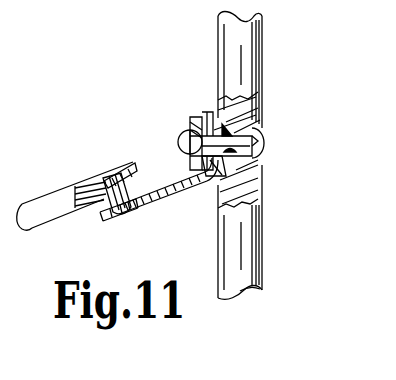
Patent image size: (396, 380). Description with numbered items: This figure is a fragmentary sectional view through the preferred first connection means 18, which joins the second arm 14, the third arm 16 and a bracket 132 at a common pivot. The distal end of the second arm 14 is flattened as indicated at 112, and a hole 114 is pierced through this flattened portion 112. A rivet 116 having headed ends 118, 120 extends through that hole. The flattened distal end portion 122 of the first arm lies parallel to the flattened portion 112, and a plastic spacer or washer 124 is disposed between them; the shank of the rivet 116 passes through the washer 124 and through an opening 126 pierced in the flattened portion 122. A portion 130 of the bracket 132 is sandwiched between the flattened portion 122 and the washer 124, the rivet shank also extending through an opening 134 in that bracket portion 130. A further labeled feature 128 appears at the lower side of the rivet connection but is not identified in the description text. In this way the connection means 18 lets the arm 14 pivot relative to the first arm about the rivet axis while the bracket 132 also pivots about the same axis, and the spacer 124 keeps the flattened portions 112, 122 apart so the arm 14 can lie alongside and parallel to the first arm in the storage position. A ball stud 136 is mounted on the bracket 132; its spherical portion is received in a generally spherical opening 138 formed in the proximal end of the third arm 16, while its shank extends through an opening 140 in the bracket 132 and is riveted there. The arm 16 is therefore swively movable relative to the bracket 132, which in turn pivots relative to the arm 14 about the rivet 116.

The second arm 14 is at (252, 242).
The third arm 16 is at (50, 196).
The first connection means 18 is at (118, 112).
The flattened portion 112 is at (248, 131).
The hole 114 is at (257, 141).
The rivet 116 is at (232, 135).
The headed end 118 is at (261, 151).
The headed end 120 is at (188, 133).
The flattened portion 122 is at (191, 117).
The plastic spacer or washer 124 is at (212, 113).
The opening 126 is at (186, 137).
The lower portion 128 is at (253, 160).
The bracket portion 130 is at (206, 113).
The bracket 132 is at (168, 192).
The opening 134 is at (185, 145).
The ball stud 136 is at (128, 184).
The spherical opening 138 is at (108, 176).
The opening 140 is at (130, 218).